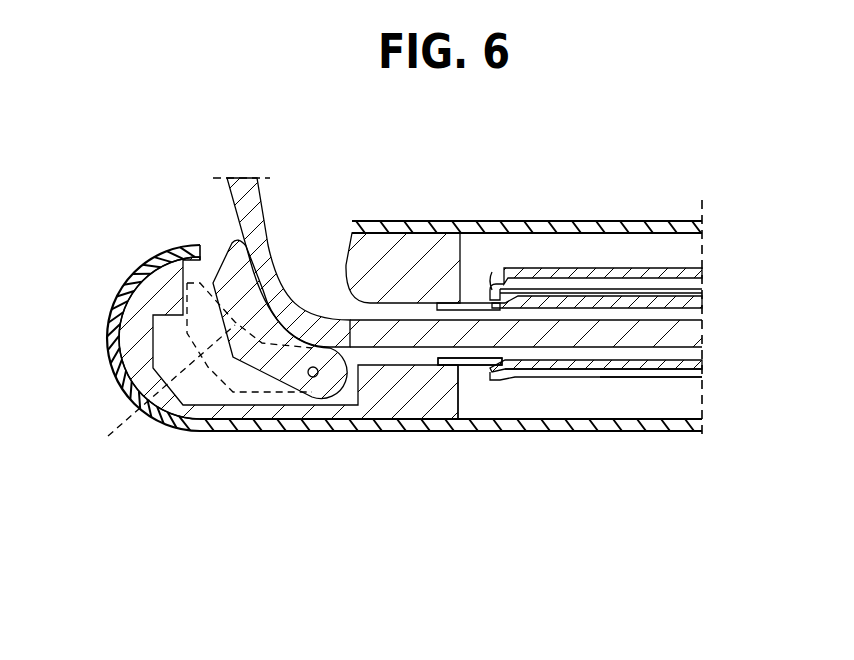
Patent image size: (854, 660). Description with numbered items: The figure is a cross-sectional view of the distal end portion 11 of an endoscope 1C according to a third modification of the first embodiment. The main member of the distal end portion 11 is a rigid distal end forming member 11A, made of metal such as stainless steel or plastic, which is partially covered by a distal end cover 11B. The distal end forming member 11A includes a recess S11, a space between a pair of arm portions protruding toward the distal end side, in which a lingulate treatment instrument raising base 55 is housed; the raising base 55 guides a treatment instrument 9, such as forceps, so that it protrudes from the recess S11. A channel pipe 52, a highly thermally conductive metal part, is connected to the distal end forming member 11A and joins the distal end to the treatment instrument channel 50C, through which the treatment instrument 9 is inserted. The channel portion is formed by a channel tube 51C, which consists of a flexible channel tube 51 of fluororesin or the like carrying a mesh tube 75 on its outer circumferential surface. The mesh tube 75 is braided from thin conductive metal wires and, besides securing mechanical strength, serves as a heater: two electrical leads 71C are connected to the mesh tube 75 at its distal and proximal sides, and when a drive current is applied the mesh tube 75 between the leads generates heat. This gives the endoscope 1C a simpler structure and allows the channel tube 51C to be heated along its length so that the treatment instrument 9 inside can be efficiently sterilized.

The endoscope 1C is at (80, 190).
The treatment instrument 9 is at (275, 202).
The recess S11 is at (310, 222).
The electrical lead 71C is at (657, 270).
The treatment instrument raising base 55 is at (153, 368).
The distal end forming member 11A is at (217, 433).
The distal end cover 11B is at (280, 433).
The distal end portion 11 is at (404, 367).
The channel tube 51 is at (547, 378).
The mesh tube 75 is at (651, 433).
The channel pipe 52 is at (472, 366).
The channel tube 51C is at (596, 449).
The treatment instrument channel 50C is at (570, 472).